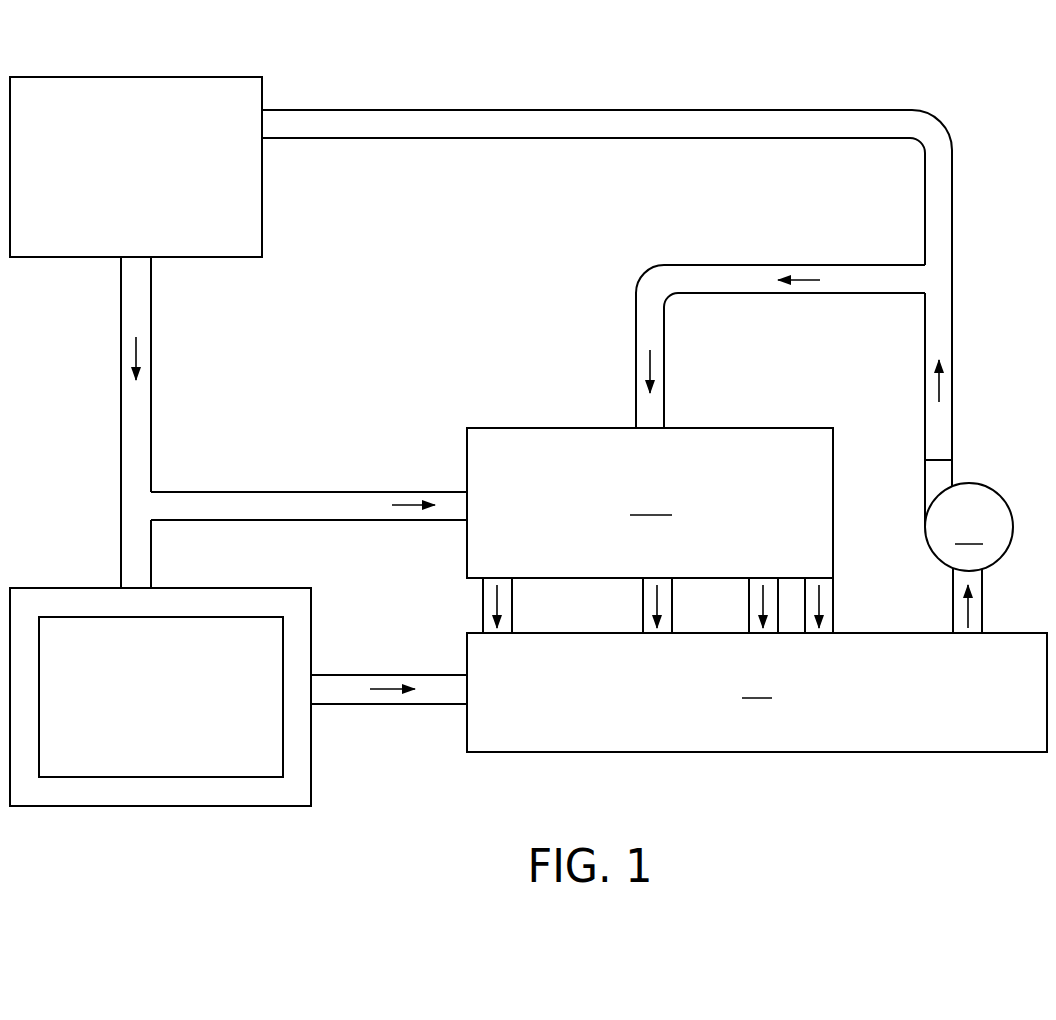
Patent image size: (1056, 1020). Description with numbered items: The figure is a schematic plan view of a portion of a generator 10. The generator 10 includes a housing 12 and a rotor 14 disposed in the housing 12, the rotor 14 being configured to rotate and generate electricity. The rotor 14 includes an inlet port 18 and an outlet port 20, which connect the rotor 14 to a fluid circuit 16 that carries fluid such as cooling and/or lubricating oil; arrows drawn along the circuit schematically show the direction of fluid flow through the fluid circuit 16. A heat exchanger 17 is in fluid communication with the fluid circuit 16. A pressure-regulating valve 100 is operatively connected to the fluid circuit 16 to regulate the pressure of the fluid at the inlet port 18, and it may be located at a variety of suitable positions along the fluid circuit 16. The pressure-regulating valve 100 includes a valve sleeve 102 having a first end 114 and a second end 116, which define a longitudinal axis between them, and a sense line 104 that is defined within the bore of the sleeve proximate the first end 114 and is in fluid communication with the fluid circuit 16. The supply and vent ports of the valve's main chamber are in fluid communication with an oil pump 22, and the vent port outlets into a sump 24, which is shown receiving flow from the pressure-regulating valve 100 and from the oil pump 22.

The generator 10 is at (252, 836).
The housing 12 is at (311, 779).
The rotor 14 is at (138, 744).
The fluid circuit 16 is at (741, 110).
The heat exchanger 17 is at (183, 77).
The inlet port 18 is at (120, 587).
The outlet port 20 is at (311, 675).
The oil pump 22 is at (969, 527).
The sump 24 is at (757, 692).
The pressure-regulating valve 100 is at (650, 503).
The valve sleeve 102 is at (788, 428).
The sense line 104 is at (466, 490).
The first end 114 is at (466, 543).
The second end 116 is at (835, 536).